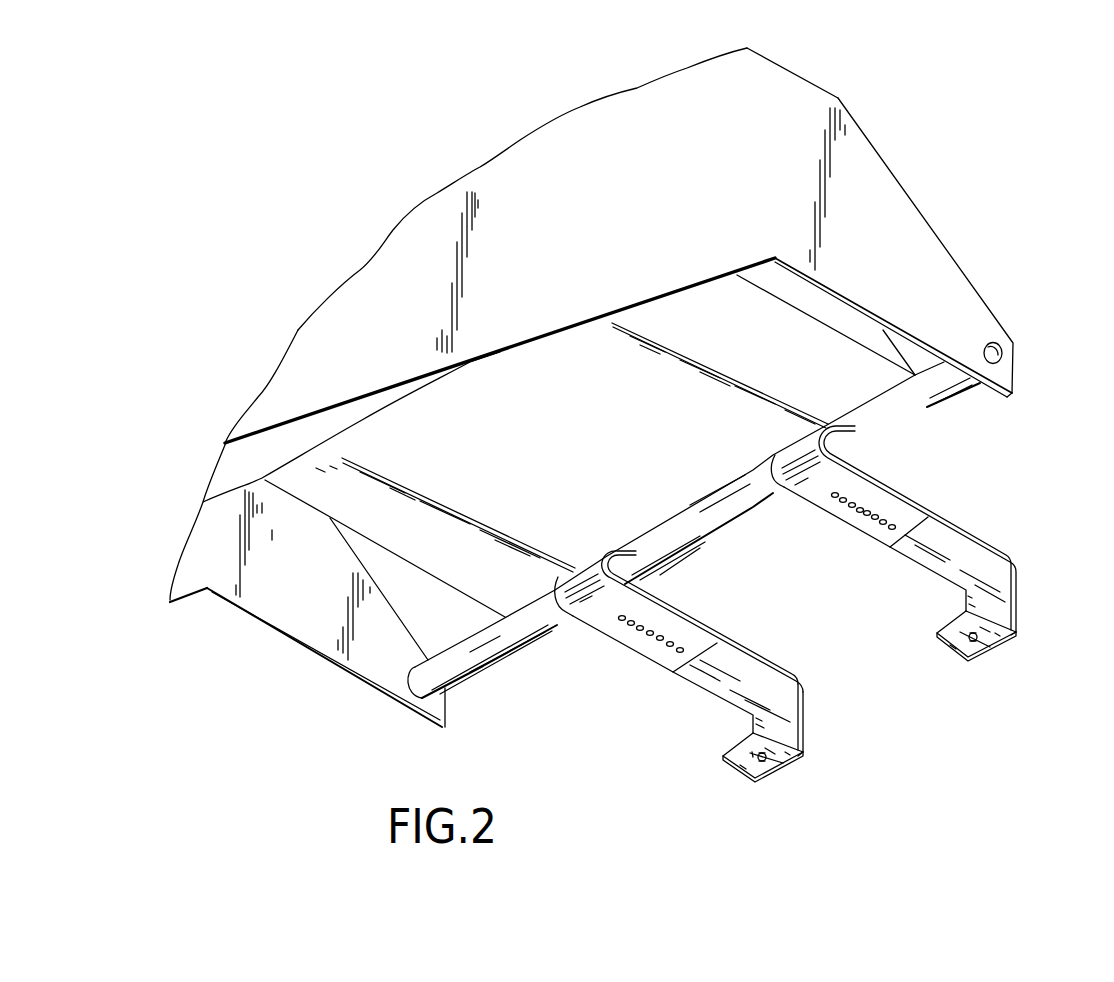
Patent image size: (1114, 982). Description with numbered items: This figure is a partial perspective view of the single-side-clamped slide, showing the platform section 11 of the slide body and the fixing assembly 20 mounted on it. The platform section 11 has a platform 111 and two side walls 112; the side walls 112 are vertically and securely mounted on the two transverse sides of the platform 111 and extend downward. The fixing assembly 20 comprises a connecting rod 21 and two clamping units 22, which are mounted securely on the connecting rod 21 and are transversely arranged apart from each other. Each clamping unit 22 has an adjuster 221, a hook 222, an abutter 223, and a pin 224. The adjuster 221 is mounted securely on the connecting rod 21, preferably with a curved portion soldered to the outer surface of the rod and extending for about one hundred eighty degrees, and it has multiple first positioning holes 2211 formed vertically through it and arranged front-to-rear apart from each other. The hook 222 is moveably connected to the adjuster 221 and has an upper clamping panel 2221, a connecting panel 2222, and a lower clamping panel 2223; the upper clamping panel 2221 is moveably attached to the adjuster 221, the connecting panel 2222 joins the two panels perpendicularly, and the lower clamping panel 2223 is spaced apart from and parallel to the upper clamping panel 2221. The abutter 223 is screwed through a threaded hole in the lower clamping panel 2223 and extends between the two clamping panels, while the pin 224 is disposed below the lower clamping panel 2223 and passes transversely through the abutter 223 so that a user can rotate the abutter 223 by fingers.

The platform section 11 is at (606, 387).
The platform 111 is at (865, 382).
The side walls 112 is at (952, 278).
The fixing assembly 20 is at (682, 554).
The connecting rod 21 is at (735, 505).
The clamping unit 22 is at (827, 629).
The adjuster 221 is at (651, 635).
The first positioning holes 2211 is at (650, 633).
The hook 222 is at (747, 692).
The upper clamping panel 2221 is at (722, 682).
The connecting panel 2222 is at (787, 715).
The lower clamping panel 2223 is at (777, 753).
The abutter 223 is at (763, 763).
The pin 224 is at (740, 767).